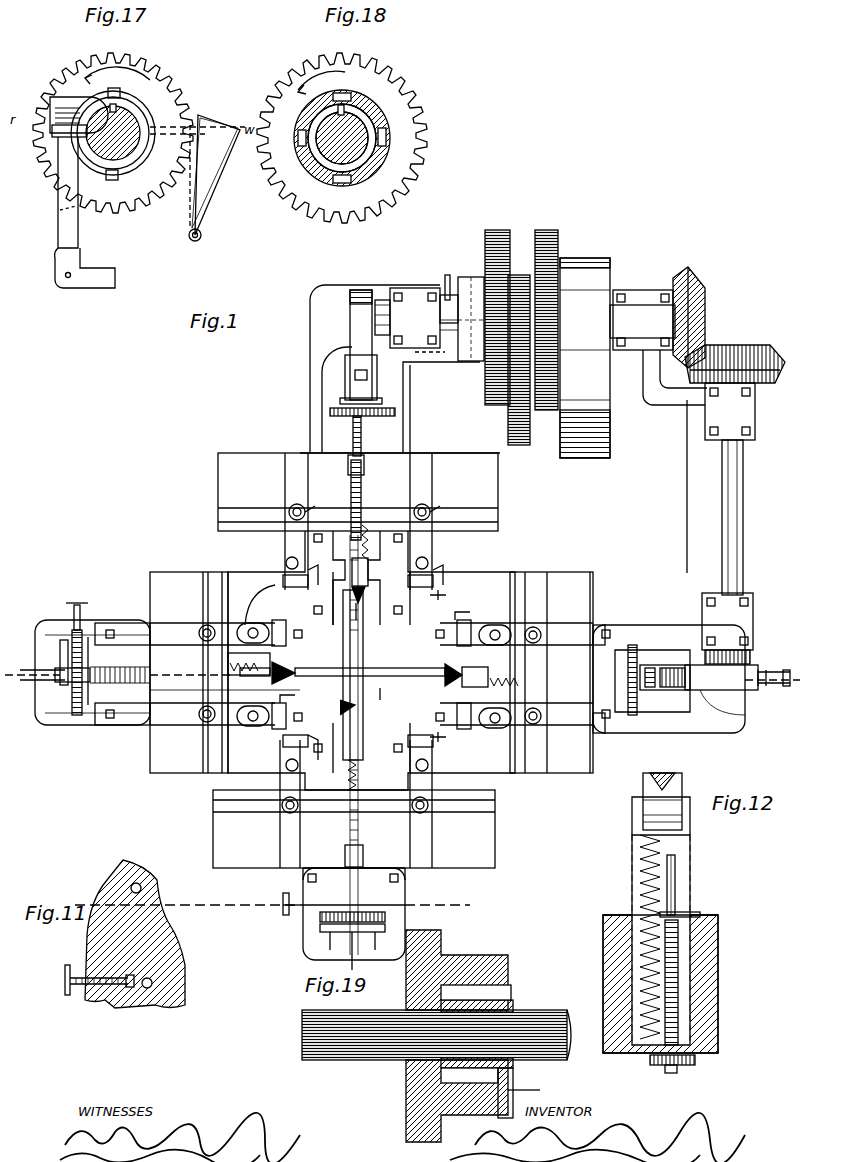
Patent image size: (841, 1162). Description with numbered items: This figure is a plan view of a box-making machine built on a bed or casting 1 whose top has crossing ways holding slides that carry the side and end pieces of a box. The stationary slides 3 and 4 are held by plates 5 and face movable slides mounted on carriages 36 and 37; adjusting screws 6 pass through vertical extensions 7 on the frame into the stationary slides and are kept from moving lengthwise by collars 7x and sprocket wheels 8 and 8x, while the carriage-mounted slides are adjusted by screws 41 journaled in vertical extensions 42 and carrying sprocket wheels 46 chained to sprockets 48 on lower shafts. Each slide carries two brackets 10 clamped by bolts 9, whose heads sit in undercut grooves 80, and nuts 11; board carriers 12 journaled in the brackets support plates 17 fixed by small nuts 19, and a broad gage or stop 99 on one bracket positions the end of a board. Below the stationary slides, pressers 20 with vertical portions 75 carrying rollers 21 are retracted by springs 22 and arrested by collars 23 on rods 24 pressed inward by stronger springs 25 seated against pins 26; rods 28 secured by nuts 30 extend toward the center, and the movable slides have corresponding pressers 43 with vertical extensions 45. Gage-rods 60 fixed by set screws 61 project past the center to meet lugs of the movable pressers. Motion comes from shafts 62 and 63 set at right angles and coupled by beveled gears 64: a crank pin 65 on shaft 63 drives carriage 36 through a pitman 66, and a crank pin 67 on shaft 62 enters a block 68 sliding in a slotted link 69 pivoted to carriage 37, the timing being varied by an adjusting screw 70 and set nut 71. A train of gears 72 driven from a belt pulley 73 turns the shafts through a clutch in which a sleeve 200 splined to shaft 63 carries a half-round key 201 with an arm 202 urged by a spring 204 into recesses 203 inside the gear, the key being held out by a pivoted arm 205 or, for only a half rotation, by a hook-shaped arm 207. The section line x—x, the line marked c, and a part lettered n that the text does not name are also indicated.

In FIG. 1, the bed or casting 1 is at (684, 512).
In FIG. 1, the stationary slide 3 is at (371, 515).
In FIG. 12, the stationary slide 3 is at (718, 990).
In FIG. 1, the stationary slide 4 is at (355, 660).
In FIG. 1, the plates 5 is at (352, 713).
In FIG. 1, the adjusting screw 6 is at (125, 655).
In FIG. 1, the vertical extensions 7 is at (78, 690).
In FIG. 11, the vertical extensions 7 is at (173, 928).
In FIG. 1, the collars 7x is at (228, 776).
In FIG. 1, the sprocket wheel 8 is at (62, 645).
In FIG. 1, the sprocket wheel 8x is at (320, 927).
In FIG. 1, the bolts 9 is at (290, 508).
In FIG. 1, the brackets 10 is at (371, 660).
In FIG. 1, the nuts 11 is at (387, 641).
In FIG. 1, the board carriers 12 is at (353, 658).
In FIG. 1, the plate 17 is at (362, 660).
In FIG. 1, the small nut 19 is at (383, 662).
In FIG. 1, the pressers 20 is at (230, 684).
In FIG. 12, the pressers 20 is at (632, 828).
In FIG. 1, the small rollers 21 is at (368, 592).
In FIG. 12, the small rollers 21 is at (682, 790).
In FIG. 1, the springs 22 is at (393, 650).
In FIG. 12, the springs 22 is at (655, 840).
In FIG. 12, the washers or collars 23 is at (695, 1060).
In FIG. 1, the horizontal rods 24 is at (232, 670).
In FIG. 12, the horizontal rods 24 is at (675, 880).
In FIG. 1, the springs 25 is at (376, 712).
In FIG. 12, the springs 25 is at (678, 945).
In FIG. 12, the pins 26 is at (672, 925).
In FIG. 1, the rods 28 is at (370, 685).
In FIG. 1, the nuts 30 is at (380, 659).
In FIG. 1, the carriage 36 is at (367, 436).
In FIG. 1, the carriage 37 is at (645, 710).
In FIG. 1, the screws 41 is at (361, 495).
In FIG. 1, the vertical extensions 42 is at (660, 690).
In FIG. 1, the pressers 43 is at (368, 565).
In FIG. 1, the vertical extensions 45 is at (369, 610).
In FIG. 1, the sprocket wheels 46 is at (395, 412).
In FIG. 1, the sprockets 48 is at (372, 403).
In FIG. 1, the gage-rods 60 is at (354, 745).
In FIG. 11, the gage-rods 60 is at (130, 987).
In FIG. 1, the set screws 61 is at (80, 603).
In FIG. 11, the set screws 61 is at (73, 995).
In FIG. 1, the shaft 62 is at (743, 520).
In FIG. 17, the shaft 63 is at (113, 160).
In FIG. 18, the shaft 63 is at (330, 160).
In FIG. 19, the shaft 63 is at (302, 1035).
In FIG. 1, the beveled gears 64 is at (700, 320).
In FIG. 1, the crank pin 65 is at (348, 300).
In FIG. 1, the link or pitman 66 is at (352, 336).
In FIG. 1, the crank pin 67 is at (725, 690).
In FIG. 1, the block 68 is at (615, 315).
In FIG. 1, the slotted link or pitman 69 is at (736, 710).
In FIG. 1, the adjusting screw 70 is at (788, 668).
In FIG. 1, the set nut 71 is at (765, 668).
In FIG. 17, the train of gears 72 is at (113, 133).
In FIG. 18, the train of gears 72 is at (342, 138).
In FIG. 1, the train of gears 72 is at (500, 230).
In FIG. 19, the train of gears 72 is at (416, 1060).
In FIG. 1, the belt pulley 73 is at (600, 270).
In FIG. 12, the vertical portions 75 is at (650, 778).
In FIG. 1, the undercut grooves 80 is at (498, 515).
In FIG. 1, the broad gage or stop 99 is at (275, 588).
In FIG. 17, the sleeve 200 is at (135, 170).
In FIG. 18, the sleeve 200 is at (370, 120).
In FIG. 19, the sleeve 200 is at (513, 1006).
In FIG. 18, the half round pin or key 201 is at (320, 150).
In FIG. 19, the half round pin or key 201 is at (513, 1075).
In FIG. 17, the arm 202 is at (57, 137).
In FIG. 19, the arm 202 is at (537, 1090).
In FIG. 18, the recesses 203 is at (340, 200).
In FIG. 19, the recesses 203 is at (496, 990).
In FIG. 17, the spring 204 is at (50, 108).
In FIG. 17, the arm 205 is at (85, 212).
In FIG. 17, the hook-shaped arm 207 is at (199, 178).
In FIG. 1, the plate n is at (424, 322).
In FIG. 1, the section line x— x is at (405, 679).
In FIG. 1, the section line c—d c is at (274, 903).